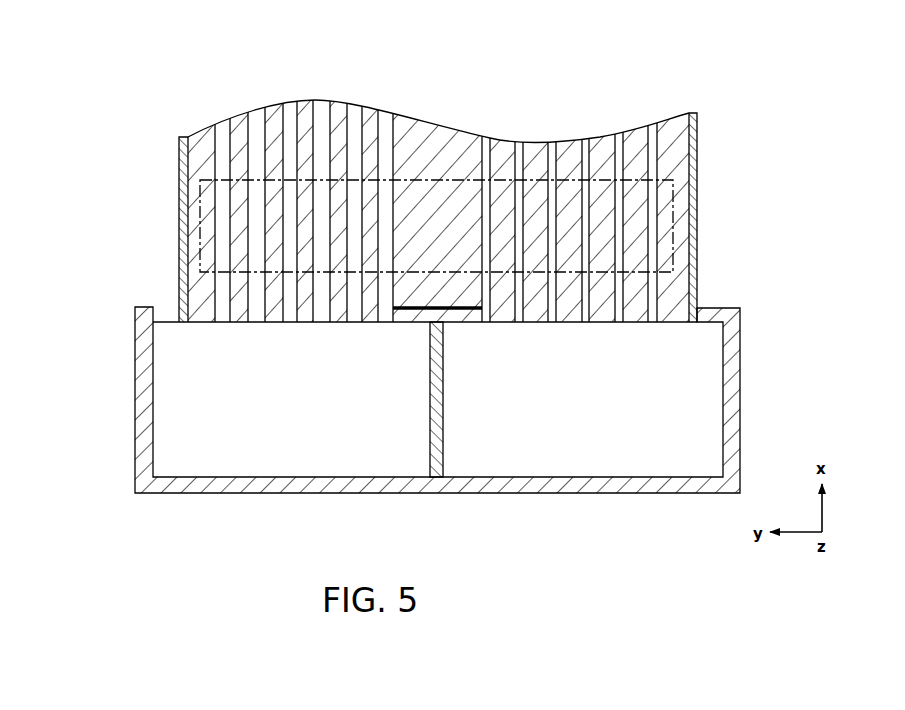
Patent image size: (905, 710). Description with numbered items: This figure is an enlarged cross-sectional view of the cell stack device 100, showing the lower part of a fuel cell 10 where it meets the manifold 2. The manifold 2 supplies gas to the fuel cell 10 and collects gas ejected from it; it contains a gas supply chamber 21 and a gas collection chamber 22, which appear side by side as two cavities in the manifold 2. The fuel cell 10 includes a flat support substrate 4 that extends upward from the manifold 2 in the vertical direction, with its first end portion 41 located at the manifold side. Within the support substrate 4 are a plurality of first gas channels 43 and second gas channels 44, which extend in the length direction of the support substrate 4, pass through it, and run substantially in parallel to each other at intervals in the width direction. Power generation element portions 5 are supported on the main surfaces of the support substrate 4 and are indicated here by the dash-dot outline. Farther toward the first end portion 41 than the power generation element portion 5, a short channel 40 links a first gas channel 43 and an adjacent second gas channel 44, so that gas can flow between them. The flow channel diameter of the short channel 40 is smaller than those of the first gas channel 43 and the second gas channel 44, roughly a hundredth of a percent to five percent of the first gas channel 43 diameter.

The cell stack device 100 is at (600, 90).
The fuel cell 10 is at (176, 151).
The support substrate 4 is at (176, 182).
The power generation element portion 5 is at (200, 205).
The first gas channel 43 is at (213, 252).
The second gas channel 44 is at (661, 292).
The first end portion 41 is at (182, 299).
The manifold 2 is at (128, 407).
The gas supply chamber 21 is at (305, 432).
The gas collection chamber 22 is at (607, 427).
The short channel 40 is at (455, 310).